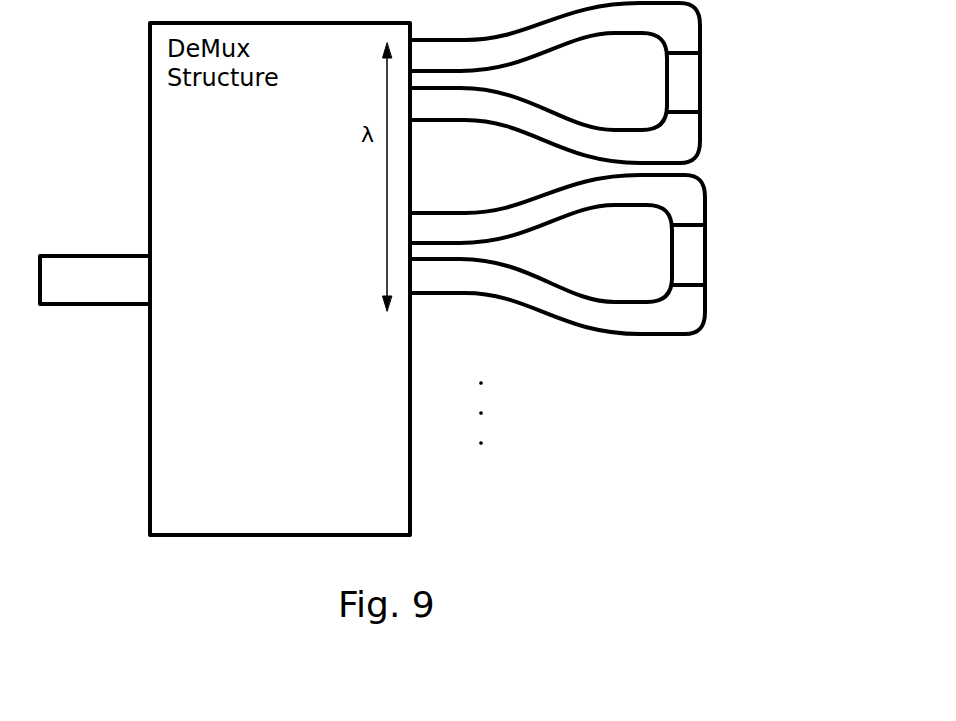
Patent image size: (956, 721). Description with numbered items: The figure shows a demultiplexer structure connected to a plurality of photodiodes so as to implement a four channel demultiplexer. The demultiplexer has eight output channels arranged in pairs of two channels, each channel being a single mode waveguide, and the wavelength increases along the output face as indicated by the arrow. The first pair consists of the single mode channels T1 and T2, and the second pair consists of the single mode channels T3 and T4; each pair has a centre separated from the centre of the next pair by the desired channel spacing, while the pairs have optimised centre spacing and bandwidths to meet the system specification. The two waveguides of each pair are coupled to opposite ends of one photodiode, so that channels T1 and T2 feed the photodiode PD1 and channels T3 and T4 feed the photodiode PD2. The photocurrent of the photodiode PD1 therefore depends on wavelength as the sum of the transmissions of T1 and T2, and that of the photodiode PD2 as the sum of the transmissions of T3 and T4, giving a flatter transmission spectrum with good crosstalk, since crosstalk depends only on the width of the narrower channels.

The first single mode channel T1 is at (437, 60).
The second single mode channel T2 is at (437, 107).
The third single mode channel T3 is at (439, 234).
The fourth single mode channel T4 is at (439, 280).
The first photodiode PD1 is at (642, 83).
The second photodiode PD2 is at (643, 254).